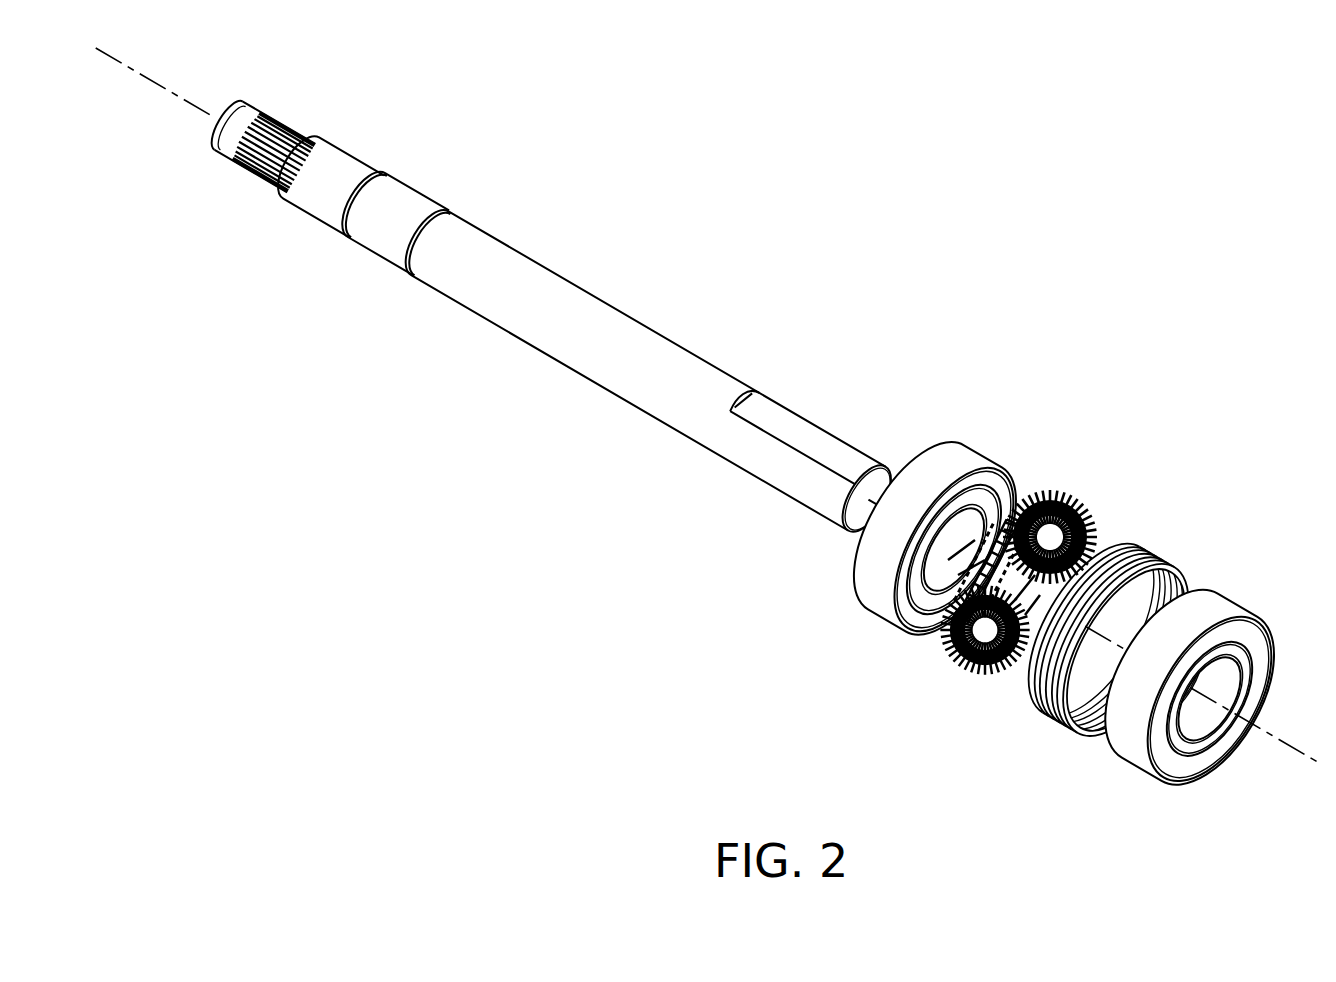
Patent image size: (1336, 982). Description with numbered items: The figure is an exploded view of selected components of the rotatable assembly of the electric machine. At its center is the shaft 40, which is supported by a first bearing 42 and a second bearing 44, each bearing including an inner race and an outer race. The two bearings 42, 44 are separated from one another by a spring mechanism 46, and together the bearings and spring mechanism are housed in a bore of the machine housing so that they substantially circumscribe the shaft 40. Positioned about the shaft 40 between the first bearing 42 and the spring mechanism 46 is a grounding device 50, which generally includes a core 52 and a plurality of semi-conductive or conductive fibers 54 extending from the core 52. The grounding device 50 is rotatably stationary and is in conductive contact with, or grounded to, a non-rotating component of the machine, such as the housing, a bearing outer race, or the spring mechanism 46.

The shaft 40 is at (513, 270).
The first bearing 42 is at (962, 462).
The second bearing 44 is at (1210, 605).
The spring mechanism 46 is at (1153, 572).
The grounding device 50 is at (989, 570).
The core 52 is at (930, 578).
The fibers 54 is at (983, 680).